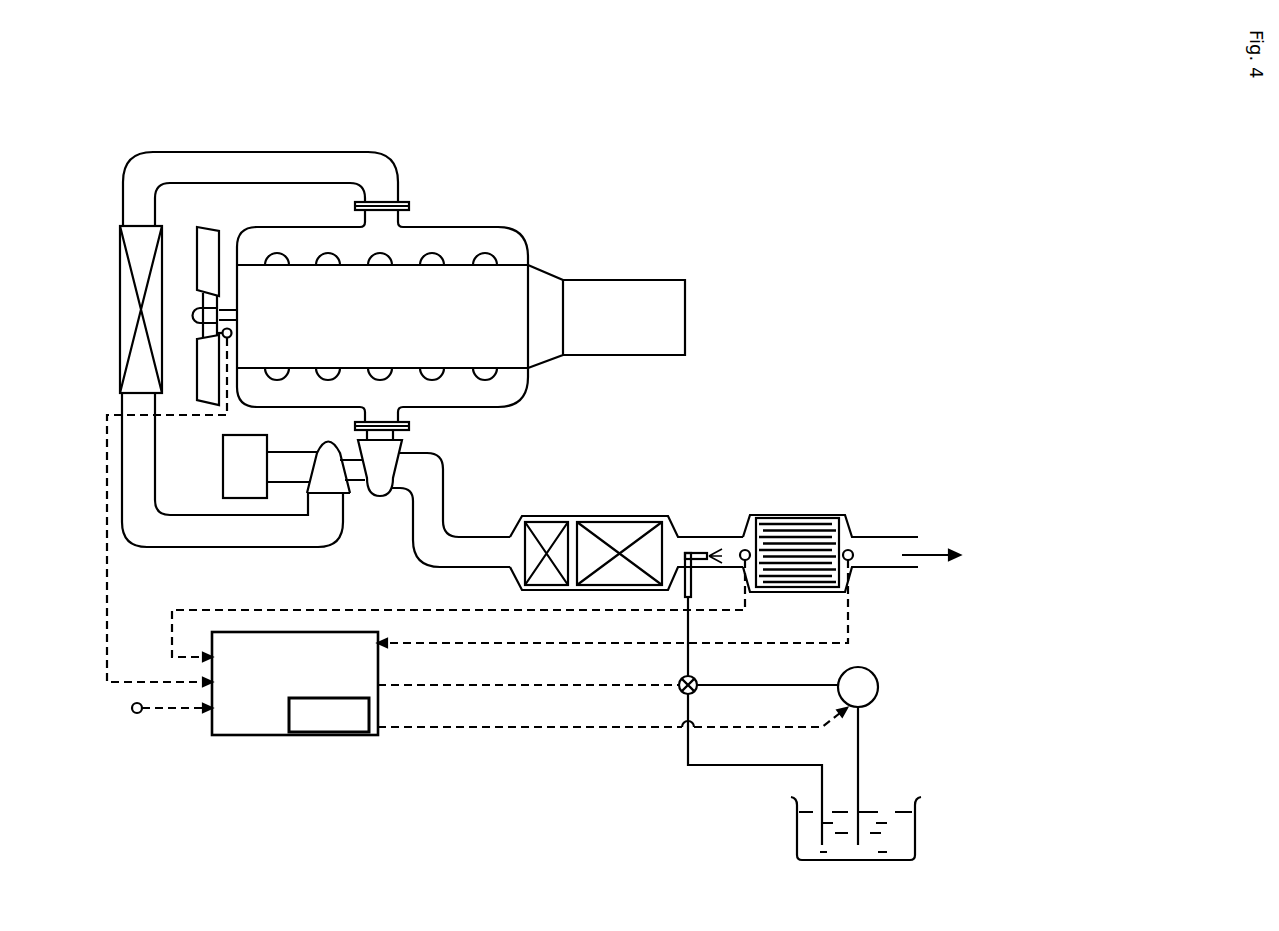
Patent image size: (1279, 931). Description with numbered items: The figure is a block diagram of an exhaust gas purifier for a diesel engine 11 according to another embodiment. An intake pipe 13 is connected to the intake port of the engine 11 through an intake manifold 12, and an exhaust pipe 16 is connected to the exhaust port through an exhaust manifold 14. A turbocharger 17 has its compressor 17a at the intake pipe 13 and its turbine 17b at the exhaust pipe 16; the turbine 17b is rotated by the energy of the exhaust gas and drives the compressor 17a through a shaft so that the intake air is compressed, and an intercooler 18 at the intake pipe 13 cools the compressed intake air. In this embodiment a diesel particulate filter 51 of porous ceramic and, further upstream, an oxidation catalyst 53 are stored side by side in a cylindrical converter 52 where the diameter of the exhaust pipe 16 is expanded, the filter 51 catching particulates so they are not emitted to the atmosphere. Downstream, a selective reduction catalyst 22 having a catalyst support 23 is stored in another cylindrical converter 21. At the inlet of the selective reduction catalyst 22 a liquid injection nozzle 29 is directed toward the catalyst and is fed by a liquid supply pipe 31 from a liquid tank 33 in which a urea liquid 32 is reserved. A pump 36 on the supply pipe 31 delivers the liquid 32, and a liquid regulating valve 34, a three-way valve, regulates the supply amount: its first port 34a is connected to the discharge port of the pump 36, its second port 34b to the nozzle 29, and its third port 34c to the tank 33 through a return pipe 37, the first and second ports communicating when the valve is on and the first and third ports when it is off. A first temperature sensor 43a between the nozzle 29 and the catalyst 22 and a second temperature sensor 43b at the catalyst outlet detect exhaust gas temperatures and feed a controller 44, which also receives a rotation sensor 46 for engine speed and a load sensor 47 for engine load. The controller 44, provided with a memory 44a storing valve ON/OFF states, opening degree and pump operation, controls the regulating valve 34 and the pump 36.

The diesel engine 11 is at (292, 291).
The intake manifold 12 is at (278, 226).
The intake pipe 13 is at (123, 197).
The exhaust manifold 14 is at (485, 407).
The exhaust pipe 16 is at (440, 468).
The turbocharger 17 is at (188, 437).
The compressor 17a is at (328, 480).
The turbine 17b is at (380, 478).
The intercooler 18 is at (120, 283).
The cylindrical converter 21 is at (826, 514).
The selective reduction catalyst 22 is at (786, 512).
The catalyst support 23 is at (791, 588).
The liquid injection nozzle 29 is at (690, 550).
The liquid supply pipe 31 is at (690, 630).
The urea liquid 32 is at (790, 798).
The liquid tank 33 is at (797, 840).
The liquid regulating valve 34 is at (702, 678).
The first port 34a is at (695, 692).
The second port 34b is at (681, 679).
The third port 34c is at (681, 692).
The pump 36 is at (878, 687).
The return pipe 37 is at (727, 767).
The first temperature sensor 43a is at (745, 550).
The second temperature sensor 43b is at (850, 550).
The controller 44 is at (250, 736).
The memory 44a is at (328, 733).
The rotation sensor 46 is at (197, 333).
The load sensor 47 is at (137, 713).
The diesel particulate filter 51 is at (598, 527).
The cylindrical converter 52 is at (628, 517).
The oxidation catalyst 53 is at (541, 527).